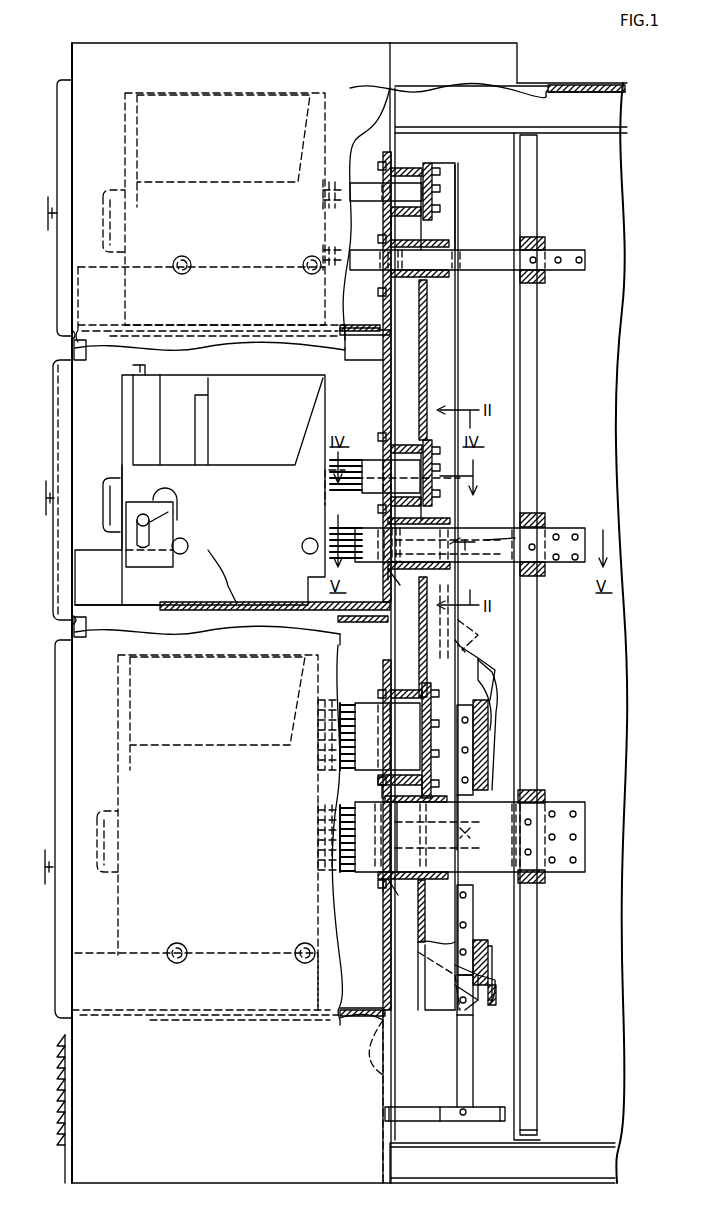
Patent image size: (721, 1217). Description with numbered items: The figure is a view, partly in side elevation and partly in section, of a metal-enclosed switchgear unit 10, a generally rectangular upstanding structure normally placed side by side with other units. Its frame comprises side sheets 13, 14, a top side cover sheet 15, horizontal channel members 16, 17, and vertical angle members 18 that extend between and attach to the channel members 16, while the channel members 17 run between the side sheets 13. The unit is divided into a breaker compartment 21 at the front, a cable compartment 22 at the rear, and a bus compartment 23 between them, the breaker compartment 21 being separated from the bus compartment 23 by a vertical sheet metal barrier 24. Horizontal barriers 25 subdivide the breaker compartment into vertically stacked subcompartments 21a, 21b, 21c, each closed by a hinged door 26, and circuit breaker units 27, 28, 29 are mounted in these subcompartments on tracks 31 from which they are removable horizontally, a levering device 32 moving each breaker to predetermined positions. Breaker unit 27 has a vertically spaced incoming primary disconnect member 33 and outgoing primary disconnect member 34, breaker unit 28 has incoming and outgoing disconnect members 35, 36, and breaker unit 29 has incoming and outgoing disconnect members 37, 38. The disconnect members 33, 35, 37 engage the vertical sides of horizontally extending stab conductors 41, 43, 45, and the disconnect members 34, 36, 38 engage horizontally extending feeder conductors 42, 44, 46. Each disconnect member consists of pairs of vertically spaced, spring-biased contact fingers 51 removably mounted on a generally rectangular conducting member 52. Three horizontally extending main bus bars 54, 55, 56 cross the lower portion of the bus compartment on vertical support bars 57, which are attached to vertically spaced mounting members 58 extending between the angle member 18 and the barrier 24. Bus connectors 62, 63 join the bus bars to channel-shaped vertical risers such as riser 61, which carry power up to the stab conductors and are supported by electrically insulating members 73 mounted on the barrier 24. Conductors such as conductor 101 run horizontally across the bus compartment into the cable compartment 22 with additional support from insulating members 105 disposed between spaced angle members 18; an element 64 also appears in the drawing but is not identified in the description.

The switchgear unit 10 is at (660, 608).
The side sheet 13 is at (176, 47).
The side sheet 14 is at (512, 60).
The top side cover sheet 15 is at (448, 47).
The horizontal channel member 16 is at (580, 128).
The horizontal channel member 17 is at (74, 350).
The vertical angle member 18 is at (537, 388).
The breaker compartment 21 is at (360, 378).
The subcompartment 21a is at (82, 130).
The subcompartment 21b is at (72, 438).
The subcompartment 21c is at (72, 788).
The cable compartment 22 is at (592, 444).
The bus compartment 23 is at (497, 337).
The vertical sheet metal barrier 24 is at (383, 401).
The horizontal barrier 25 is at (372, 326).
The hinged door 26 is at (58, 288).
The circuit breaker unit 27 is at (230, 92).
The circuit breaker unit 28 is at (262, 428).
The circuit breaker unit 29 is at (118, 720).
The track 31 is at (220, 270).
The levering device 32 is at (143, 514).
The incoming primary disconnect member 33 is at (370, 233).
The outgoing primary disconnect member 34 is at (370, 297).
The incoming primary disconnect member 35 is at (330, 507).
The outgoing disconnect member 36 is at (298, 575).
The incoming primary disconnect member 37 is at (368, 795).
The outgoing primary disconnect member 38 is at (368, 891).
The stab conductor 41 is at (365, 185).
The feeder conductor 42 is at (478, 255).
The stab conductor 43 is at (368, 496).
The feeder conductor 44 is at (388, 572).
The stab conductor 45 is at (368, 712).
The feeder conductor 46 is at (386, 882).
The contact finger 51 is at (330, 481).
The conducting member 52 is at (324, 206).
The main bus bar 54 is at (490, 758).
The main bus bar 55 is at (490, 905).
The main bus bar 56 is at (490, 1070).
The vertical support bar 57 is at (466, 640).
The mounting member 58 is at (497, 533).
The vertical riser 61 is at (455, 372).
The bus connector 62 is at (490, 708).
The bus connector 63 is at (468, 648).
The plate 64 is at (455, 299).
The electrically insulating member 73 is at (378, 435).
The conductor 101 is at (478, 568).
The electrically insulating member 105 is at (535, 513).